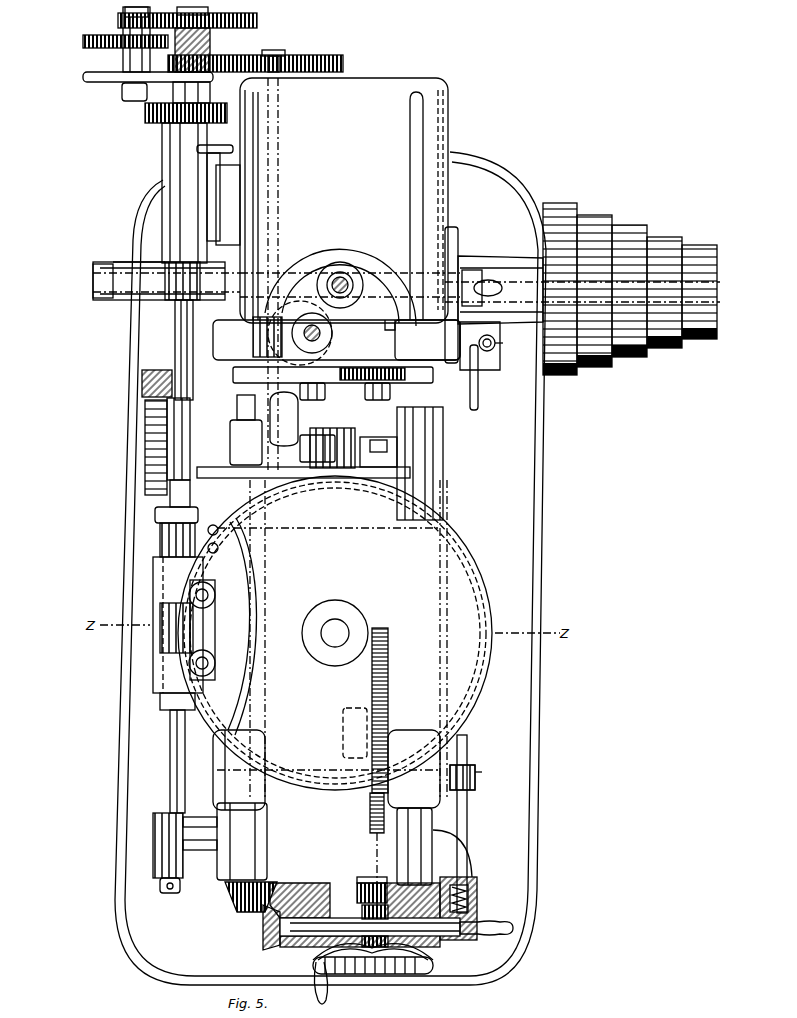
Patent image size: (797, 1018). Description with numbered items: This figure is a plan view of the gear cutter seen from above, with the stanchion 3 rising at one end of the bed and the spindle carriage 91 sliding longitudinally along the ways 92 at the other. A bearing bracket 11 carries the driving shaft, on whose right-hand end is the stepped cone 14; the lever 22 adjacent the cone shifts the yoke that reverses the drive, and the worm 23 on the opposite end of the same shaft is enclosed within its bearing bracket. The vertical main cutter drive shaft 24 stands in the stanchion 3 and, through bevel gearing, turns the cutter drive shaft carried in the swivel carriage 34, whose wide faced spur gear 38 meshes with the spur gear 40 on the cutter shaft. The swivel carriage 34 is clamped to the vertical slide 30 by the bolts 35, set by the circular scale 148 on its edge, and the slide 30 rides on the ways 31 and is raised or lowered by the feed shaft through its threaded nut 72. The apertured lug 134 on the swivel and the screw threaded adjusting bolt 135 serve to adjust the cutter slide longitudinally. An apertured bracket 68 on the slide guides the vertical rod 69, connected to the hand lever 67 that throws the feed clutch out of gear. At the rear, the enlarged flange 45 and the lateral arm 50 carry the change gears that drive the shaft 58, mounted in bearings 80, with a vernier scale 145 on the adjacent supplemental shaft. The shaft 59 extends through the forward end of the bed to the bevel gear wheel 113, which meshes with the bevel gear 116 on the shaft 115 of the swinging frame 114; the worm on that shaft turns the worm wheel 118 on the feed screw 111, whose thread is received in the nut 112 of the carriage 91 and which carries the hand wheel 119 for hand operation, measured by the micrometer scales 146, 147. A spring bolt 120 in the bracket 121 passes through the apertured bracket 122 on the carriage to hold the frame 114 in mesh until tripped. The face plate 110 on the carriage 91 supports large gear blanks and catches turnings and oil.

The stanchion 3 is at (349, 274).
The bearing bracket 11 is at (503, 258).
The cone 14 is at (625, 360).
The lever 22 is at (482, 288).
The worm 23 is at (180, 266).
The shaft 24 is at (346, 280).
The vertical slide or carriage 30 is at (336, 340).
The ways 31 is at (344, 338).
The swivel carriage 34 is at (333, 374).
The bolts 35 is at (345, 398).
The wide faced spur gear 38 is at (150, 372).
The spur gear 40 is at (145, 468).
The enlarged flange 45 is at (210, 108).
The lateral arm 50 is at (84, 75).
The shaft 58 is at (175, 330).
The shaft 59 is at (266, 576).
The hand lever 67 is at (478, 389).
The apertured bracket 68 is at (468, 350).
The vertical rod 69 is at (495, 347).
The threaded nut 72 is at (332, 335).
The bearings 80 is at (153, 848).
The spindle carriage 91 is at (326, 770).
The ways 92 is at (414, 846).
The face plate 110 is at (472, 556).
The feed screw 111 is at (370, 812).
The nut or screw threaded aperture 112 is at (389, 720).
The bevel gear wheel 113 is at (238, 904).
The swinging frame 114 is at (296, 948).
The shaft 115 is at (322, 936).
The bevel gear 116 is at (268, 944).
The worm wheel 118 is at (392, 915).
The hand wheel 119 is at (433, 967).
The spring bolt 120 is at (468, 815).
The bracket 121 is at (473, 866).
The apertured bracket 122 is at (476, 783).
The apertured lug 134 is at (267, 419).
The screw threaded adjusting bolt 135 is at (240, 428).
The vernier scale 145 is at (160, 705).
The micrometer scale 146 is at (357, 893).
The micrometer scale 147 is at (360, 884).
The circular scale 148 is at (406, 373).